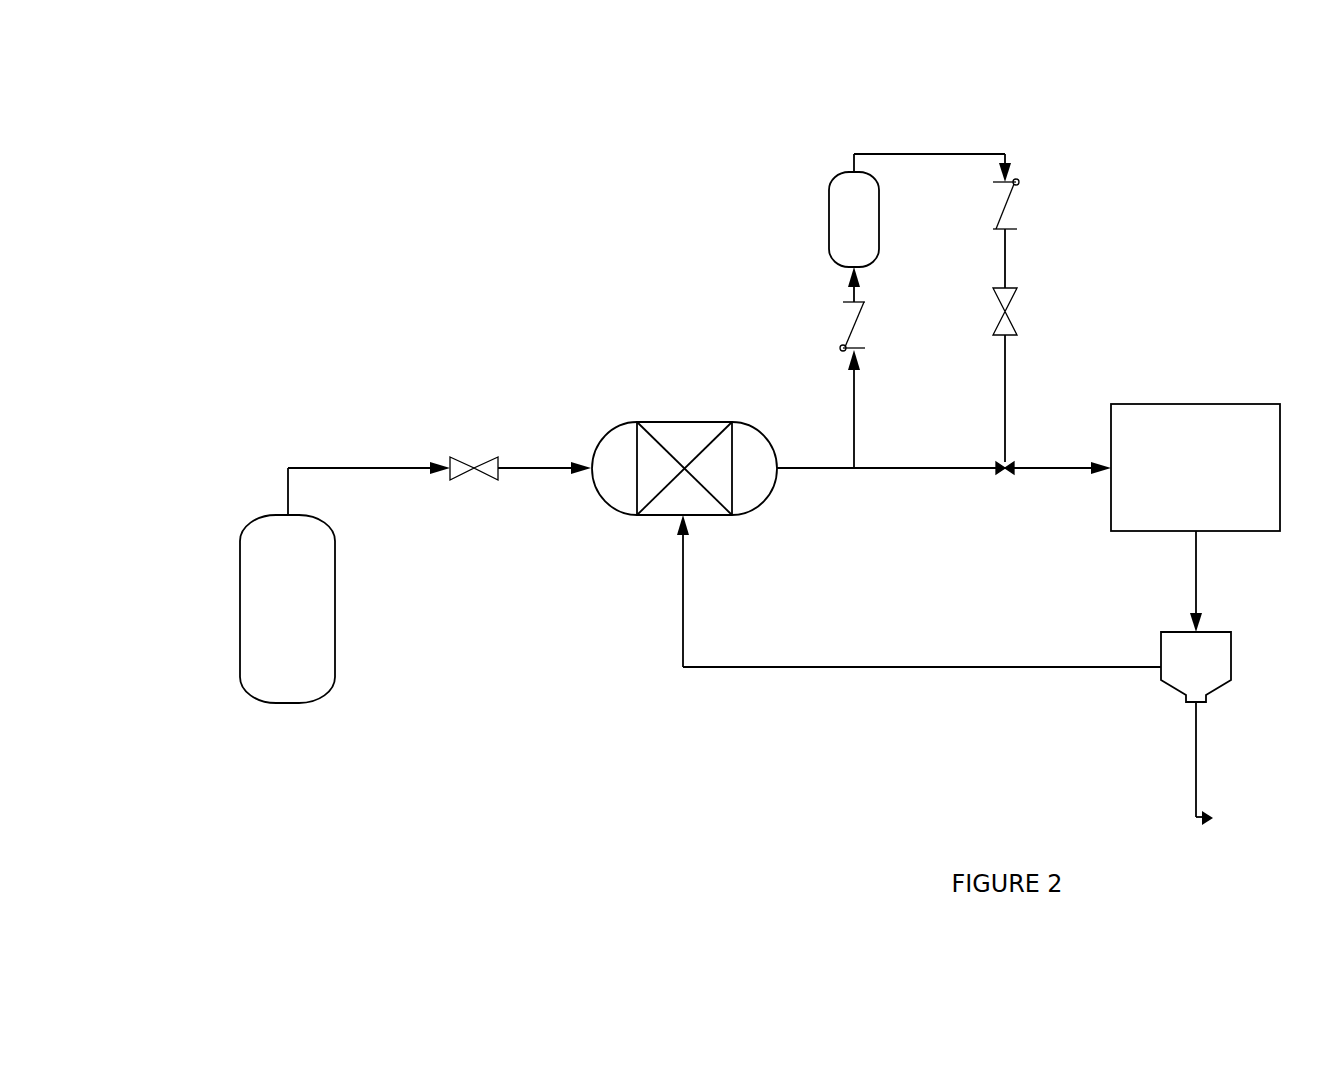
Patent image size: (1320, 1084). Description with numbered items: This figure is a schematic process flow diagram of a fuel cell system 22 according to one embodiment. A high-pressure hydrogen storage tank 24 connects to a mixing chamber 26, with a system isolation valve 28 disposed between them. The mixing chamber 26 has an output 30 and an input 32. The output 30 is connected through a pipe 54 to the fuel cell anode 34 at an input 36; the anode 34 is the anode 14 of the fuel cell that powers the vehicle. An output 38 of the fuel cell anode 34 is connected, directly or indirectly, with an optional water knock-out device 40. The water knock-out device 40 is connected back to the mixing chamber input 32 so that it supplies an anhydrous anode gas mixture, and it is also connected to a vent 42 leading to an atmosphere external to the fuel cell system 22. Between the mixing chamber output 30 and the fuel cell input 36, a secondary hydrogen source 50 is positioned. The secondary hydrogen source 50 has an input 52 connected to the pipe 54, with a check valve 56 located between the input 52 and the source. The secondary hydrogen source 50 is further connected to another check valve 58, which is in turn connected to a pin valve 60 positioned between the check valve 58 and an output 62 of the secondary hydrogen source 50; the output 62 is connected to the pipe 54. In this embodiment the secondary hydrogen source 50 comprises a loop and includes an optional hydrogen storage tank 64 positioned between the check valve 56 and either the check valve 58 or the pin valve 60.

The anode 14 is at (1198, 474).
The fuel cell system 22 is at (536, 343).
The high-pressure hydrogen storage tank 24 is at (240, 625).
The mixing chamber 26 is at (618, 515).
The system isolation valve 28 is at (450, 457).
The output 30 is at (782, 462).
The input 32 is at (693, 522).
The fuel cell anode 34 is at (1195, 429).
The input 36 is at (1110, 472).
The output 38 is at (1205, 542).
The water knock-out device 40 is at (1234, 665).
The vent 42 is at (1205, 758).
The secondary hydrogen source 50 is at (798, 190).
The input 52 is at (868, 458).
The pipe 54 is at (929, 475).
The check valve 56 is at (836, 323).
The check valve 58 is at (1022, 191).
The pin valve 60 is at (1020, 316).
The output 62 is at (1010, 460).
The hydrogen storage tank 64 is at (822, 227).